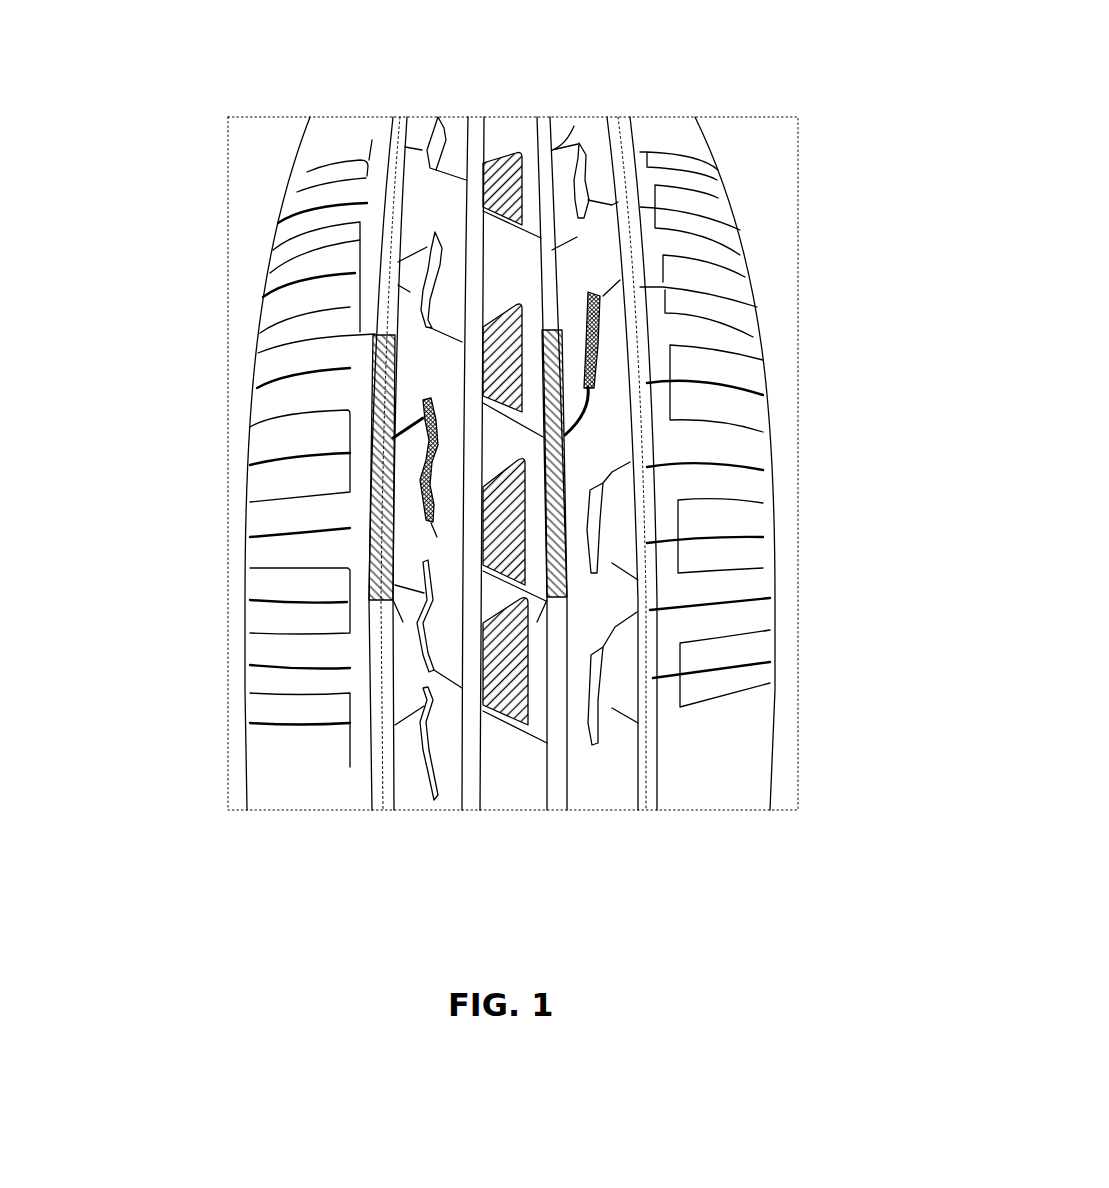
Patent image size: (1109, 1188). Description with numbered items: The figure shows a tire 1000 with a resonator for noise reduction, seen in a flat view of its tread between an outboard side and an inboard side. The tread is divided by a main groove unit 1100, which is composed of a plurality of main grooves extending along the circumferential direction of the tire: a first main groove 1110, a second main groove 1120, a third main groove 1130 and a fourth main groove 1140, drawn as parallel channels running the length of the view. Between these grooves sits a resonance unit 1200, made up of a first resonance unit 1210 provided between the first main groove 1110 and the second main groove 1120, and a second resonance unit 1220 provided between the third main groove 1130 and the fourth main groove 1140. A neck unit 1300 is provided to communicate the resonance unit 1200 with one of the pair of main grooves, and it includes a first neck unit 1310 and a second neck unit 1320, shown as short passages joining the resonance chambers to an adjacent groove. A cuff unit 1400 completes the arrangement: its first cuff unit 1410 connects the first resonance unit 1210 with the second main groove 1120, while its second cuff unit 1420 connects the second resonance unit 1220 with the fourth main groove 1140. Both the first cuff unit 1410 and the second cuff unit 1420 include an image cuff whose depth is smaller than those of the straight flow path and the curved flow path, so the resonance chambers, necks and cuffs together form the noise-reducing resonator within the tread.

The tire 1000 is at (672, 81).
The main groove unit 1100 is at (508, 525).
The first main groove 1110 is at (382, 812).
The second main groove 1120 is at (468, 812).
The third main groove 1130 is at (555, 812).
The fourth main groove 1140 is at (638, 505).
The resonance unit 1200 is at (341, 483).
The first resonance unit 1210 is at (582, 390).
The second resonance unit 1220 is at (628, 415).
The neck unit 1300 is at (294, 440).
The first neck unit 1310 is at (393, 438).
The second neck unit 1320 is at (515, 352).
The cuff unit 1400 is at (721, 424).
The first cuff unit 1410 is at (490, 501).
The second cuff unit 1420 is at (736, 318).